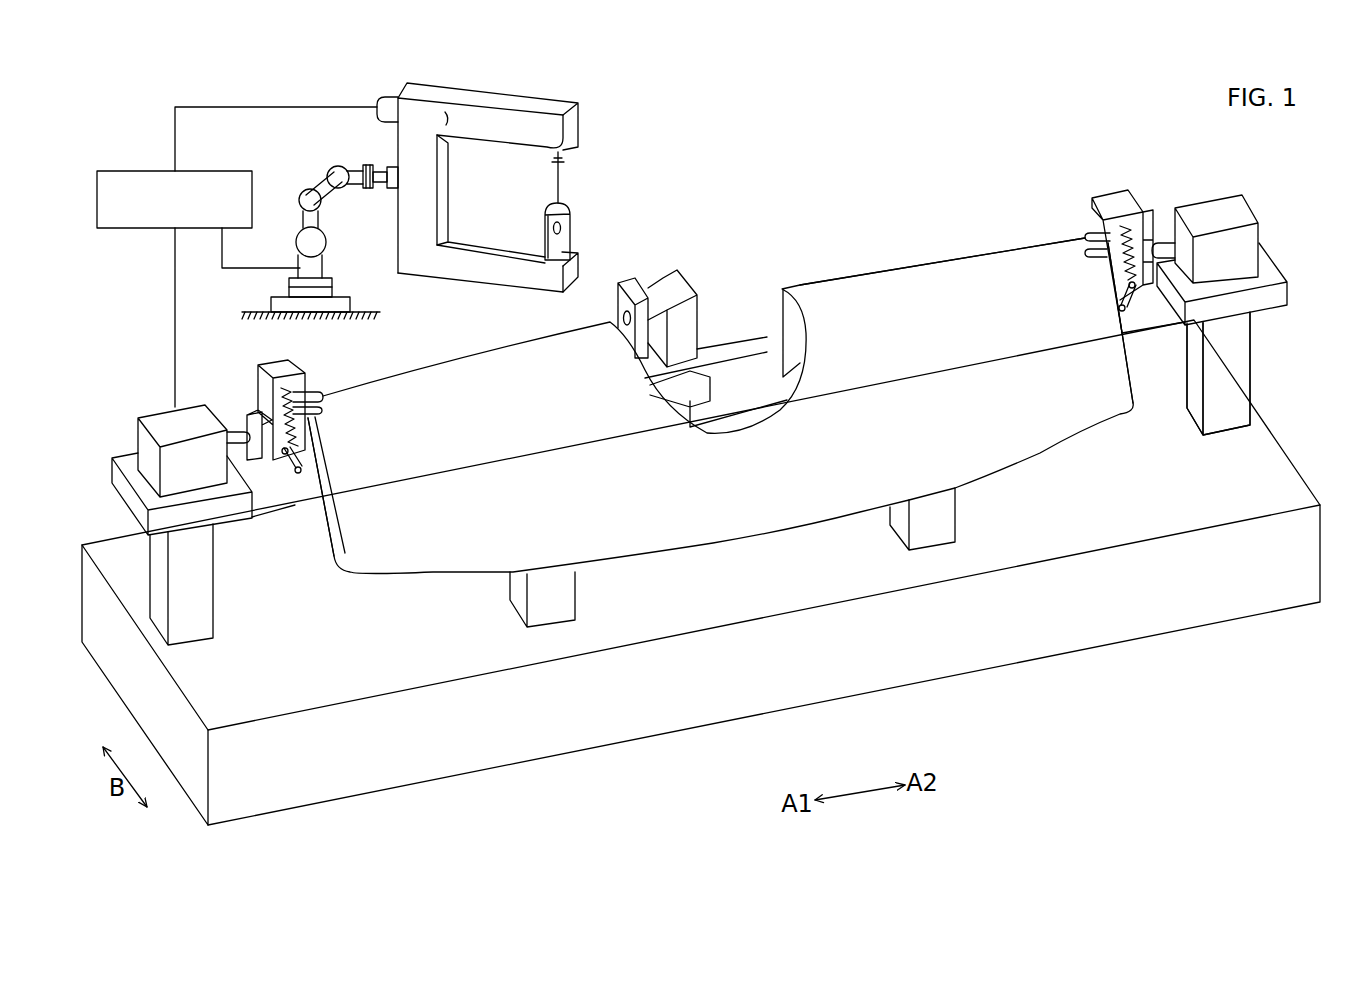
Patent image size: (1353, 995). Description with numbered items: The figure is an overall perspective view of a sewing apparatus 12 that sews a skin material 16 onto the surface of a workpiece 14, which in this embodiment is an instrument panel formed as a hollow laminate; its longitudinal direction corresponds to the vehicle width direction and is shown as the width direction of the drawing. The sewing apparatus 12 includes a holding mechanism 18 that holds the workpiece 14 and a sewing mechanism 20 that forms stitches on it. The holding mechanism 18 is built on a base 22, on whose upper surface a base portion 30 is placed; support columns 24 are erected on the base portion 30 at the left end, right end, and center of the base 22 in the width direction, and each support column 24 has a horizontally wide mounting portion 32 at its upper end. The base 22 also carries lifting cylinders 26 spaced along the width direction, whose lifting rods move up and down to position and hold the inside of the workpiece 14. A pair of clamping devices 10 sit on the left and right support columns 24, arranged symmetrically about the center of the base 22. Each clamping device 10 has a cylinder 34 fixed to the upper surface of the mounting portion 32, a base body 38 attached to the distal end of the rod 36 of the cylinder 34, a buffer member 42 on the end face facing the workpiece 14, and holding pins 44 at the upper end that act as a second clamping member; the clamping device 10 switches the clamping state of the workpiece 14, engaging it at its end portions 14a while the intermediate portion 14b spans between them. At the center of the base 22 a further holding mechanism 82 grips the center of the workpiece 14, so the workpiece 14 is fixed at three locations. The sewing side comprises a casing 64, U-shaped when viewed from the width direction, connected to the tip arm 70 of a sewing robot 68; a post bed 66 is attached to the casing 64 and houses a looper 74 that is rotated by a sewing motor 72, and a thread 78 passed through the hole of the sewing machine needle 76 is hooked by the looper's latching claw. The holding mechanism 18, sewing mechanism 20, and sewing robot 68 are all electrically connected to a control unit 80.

The clamping device 10 is at (247, 360).
The sewing apparatus 12 is at (942, 121).
The workpiece 14 is at (832, 263).
The end portion of frame member 14a is at (302, 490).
The intermediate portion of frame member 14b is at (942, 263).
The skin material 16 is at (473, 377).
The holding mechanism 18 is at (1258, 375).
The sewing mechanism 20 is at (593, 113).
The base 22 is at (1247, 597).
The support column 24 is at (200, 595).
The lifting cylinder 26 is at (503, 597).
The base portion 30 is at (1263, 457).
The mounting portion 32 is at (127, 457).
The cylinder 34 is at (155, 405).
The rod 36 is at (237, 428).
The base body 38 is at (273, 355).
The buffer member 42 is at (315, 440).
The holding pins 44 is at (323, 410).
The casing 64 is at (530, 103).
The post bed 66 is at (571, 230).
The sewing robot 68 is at (316, 178).
The tip arm 70 is at (357, 188).
The sewing motor 72 is at (375, 97).
The looper 74 is at (548, 223).
The sewing machine needle 76 is at (564, 170).
The thread 78 is at (493, 130).
The control unit 80 is at (136, 171).
The holding mechanism 82 is at (665, 305).